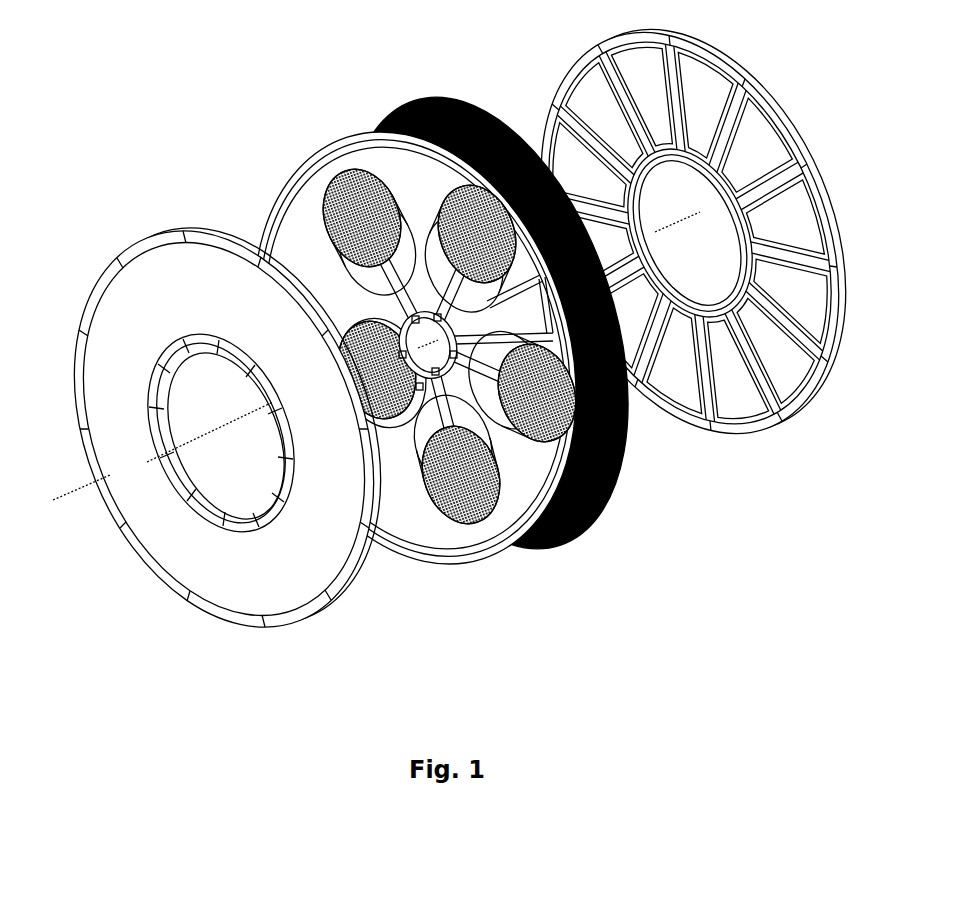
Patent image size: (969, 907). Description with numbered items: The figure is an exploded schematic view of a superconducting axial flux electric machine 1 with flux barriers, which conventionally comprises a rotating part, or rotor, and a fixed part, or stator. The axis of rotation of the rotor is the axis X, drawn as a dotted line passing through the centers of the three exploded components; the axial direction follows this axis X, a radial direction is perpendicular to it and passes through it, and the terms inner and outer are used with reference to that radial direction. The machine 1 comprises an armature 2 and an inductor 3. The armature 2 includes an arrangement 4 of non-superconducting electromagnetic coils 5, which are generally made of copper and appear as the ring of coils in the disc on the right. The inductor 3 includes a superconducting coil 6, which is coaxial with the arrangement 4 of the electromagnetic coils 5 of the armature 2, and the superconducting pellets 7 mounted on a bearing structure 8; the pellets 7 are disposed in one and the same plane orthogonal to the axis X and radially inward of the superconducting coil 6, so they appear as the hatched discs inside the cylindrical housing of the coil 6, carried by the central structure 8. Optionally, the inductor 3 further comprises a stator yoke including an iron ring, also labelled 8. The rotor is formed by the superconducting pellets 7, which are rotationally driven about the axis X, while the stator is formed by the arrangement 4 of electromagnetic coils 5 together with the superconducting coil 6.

The superconducting axial flux electric machine 1 is at (461, 342).
The armature 2 is at (693, 251).
The inductor 3 is at (440, 332).
The arrangement of electromagnetic coils 4 is at (279, 601).
The electromagnetic coils 5 is at (805, 441).
The superconducting coil 6 is at (492, 116).
The superconducting pellets 7 is at (477, 511).
The bearing structure 8 is at (417, 406).
The axis X is at (58, 500).